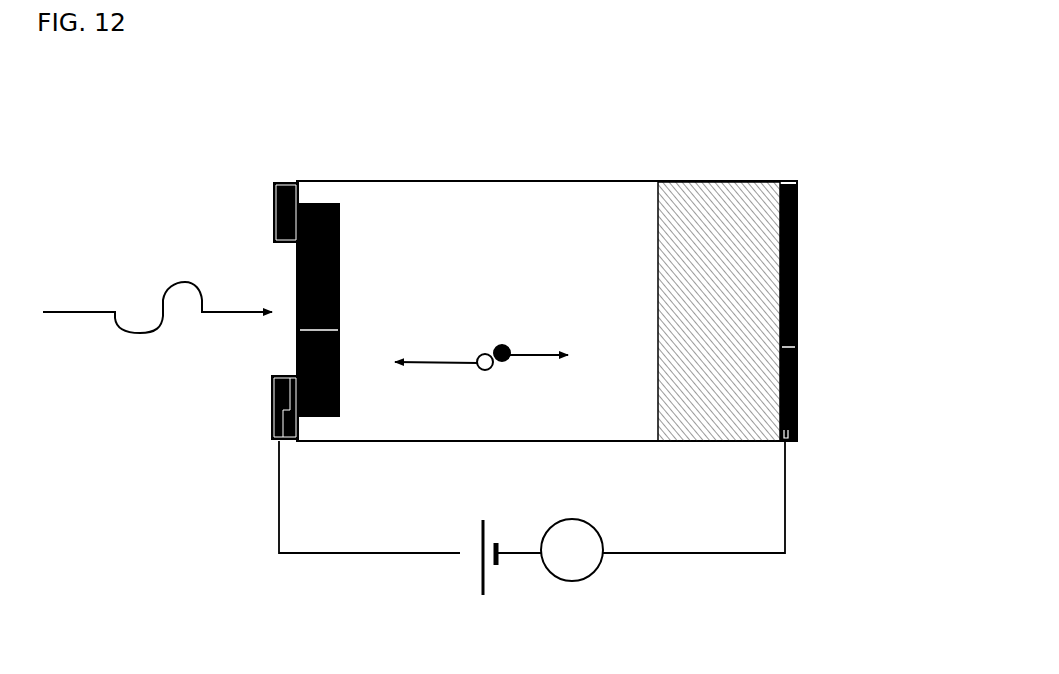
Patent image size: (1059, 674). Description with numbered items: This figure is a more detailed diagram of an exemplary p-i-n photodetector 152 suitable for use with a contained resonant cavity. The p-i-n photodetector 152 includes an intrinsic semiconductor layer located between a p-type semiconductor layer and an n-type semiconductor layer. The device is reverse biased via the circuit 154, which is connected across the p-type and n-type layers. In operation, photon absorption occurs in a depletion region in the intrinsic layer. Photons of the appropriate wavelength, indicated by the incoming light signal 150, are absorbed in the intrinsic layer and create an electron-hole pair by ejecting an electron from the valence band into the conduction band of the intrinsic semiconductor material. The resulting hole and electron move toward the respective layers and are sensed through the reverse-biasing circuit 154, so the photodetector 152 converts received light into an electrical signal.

The incident light signal 150 is at (157, 307).
The p-i-n photodetector 152 is at (772, 127).
The circuit 154 is at (808, 533).